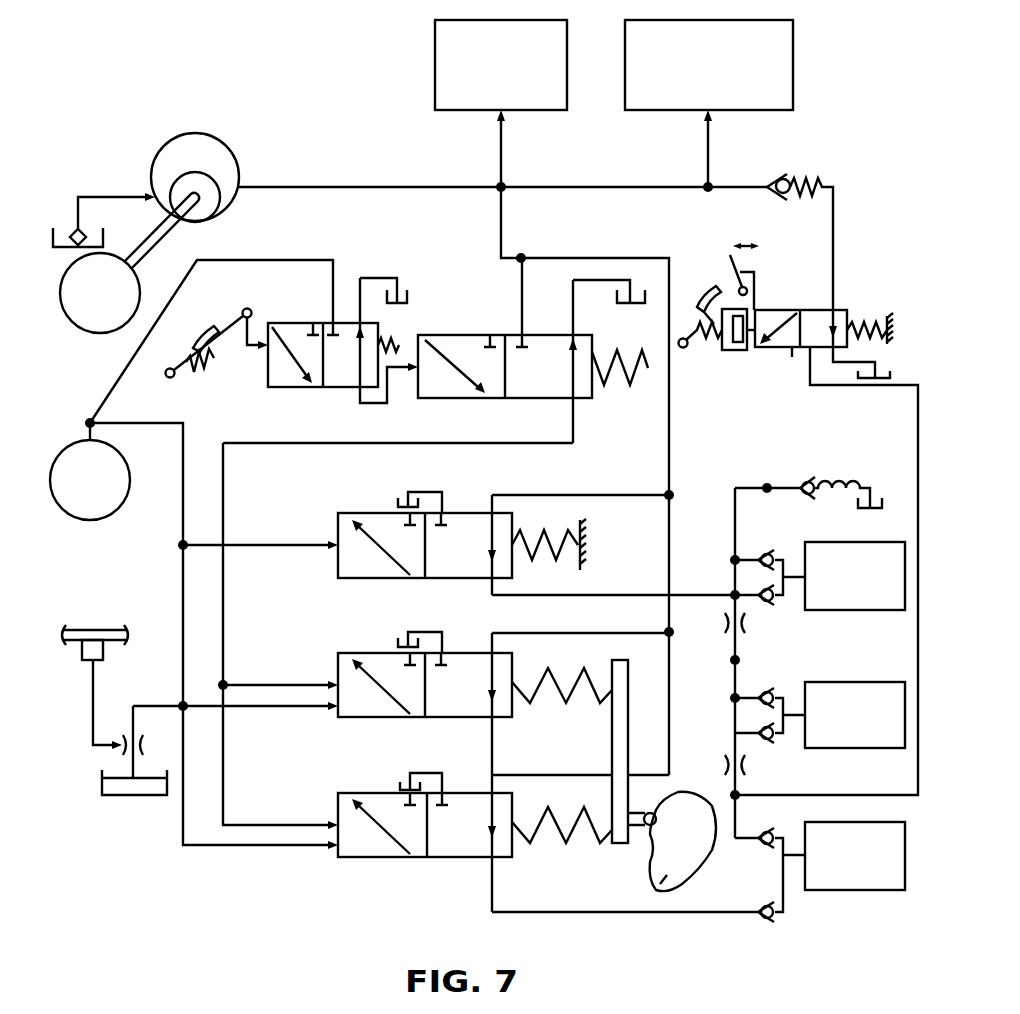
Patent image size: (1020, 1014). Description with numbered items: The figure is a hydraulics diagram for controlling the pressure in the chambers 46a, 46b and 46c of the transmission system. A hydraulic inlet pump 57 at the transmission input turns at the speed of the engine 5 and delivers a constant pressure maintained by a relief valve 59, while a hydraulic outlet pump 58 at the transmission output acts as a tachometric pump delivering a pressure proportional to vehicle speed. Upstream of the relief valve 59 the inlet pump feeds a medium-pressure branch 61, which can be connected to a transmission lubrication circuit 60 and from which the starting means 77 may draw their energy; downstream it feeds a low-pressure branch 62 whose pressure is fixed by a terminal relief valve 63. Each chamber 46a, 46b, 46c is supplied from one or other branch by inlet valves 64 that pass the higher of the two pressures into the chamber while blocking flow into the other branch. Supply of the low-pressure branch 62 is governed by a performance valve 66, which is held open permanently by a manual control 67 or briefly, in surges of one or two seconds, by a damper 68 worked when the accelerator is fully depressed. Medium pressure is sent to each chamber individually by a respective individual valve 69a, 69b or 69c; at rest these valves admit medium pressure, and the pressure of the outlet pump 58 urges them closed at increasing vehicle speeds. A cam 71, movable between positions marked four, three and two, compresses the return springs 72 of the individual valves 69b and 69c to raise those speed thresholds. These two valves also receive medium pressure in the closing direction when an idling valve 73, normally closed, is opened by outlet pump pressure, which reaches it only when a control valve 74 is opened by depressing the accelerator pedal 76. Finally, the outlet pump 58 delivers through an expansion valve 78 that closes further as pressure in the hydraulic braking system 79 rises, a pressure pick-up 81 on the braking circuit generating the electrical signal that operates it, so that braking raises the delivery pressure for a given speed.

The engine 5 is at (97, 333).
The hydraulic inlet pump 57 is at (240, 163).
The hydraulic outlet pump 58 is at (130, 487).
The relief valve 59 is at (782, 178).
The transmission lubrication circuit 60 is at (623, 100).
The medium-pressure branch 61 is at (570, 248).
The low-pressure branch 62 is at (850, 268).
The terminal relief valve 63 is at (805, 483).
The inlet valves 64 is at (760, 552).
The performance valve 66 is at (798, 300).
The manual control 67 is at (728, 258).
The damper 68 is at (720, 352).
The individual valve 69a is at (352, 503).
The individual valve 69b is at (351, 643).
The individual valve 69c is at (351, 781).
The cam 71 is at (690, 872).
The return springs 72 is at (554, 673).
The idling valve 73 is at (600, 410).
The control valve 74 is at (288, 394).
The accelerator pedal 76 is at (193, 350).
The starting means 77 is at (435, 43).
The expansion valve 78 is at (150, 748).
The hydraulic braking system 79 is at (88, 628).
The pressure pick-up 81 is at (105, 652).
The hydraulic chamber 46a is at (855, 576).
The hydraulic chamber 46b is at (855, 715).
The hydraulic chamber 46c is at (855, 856).